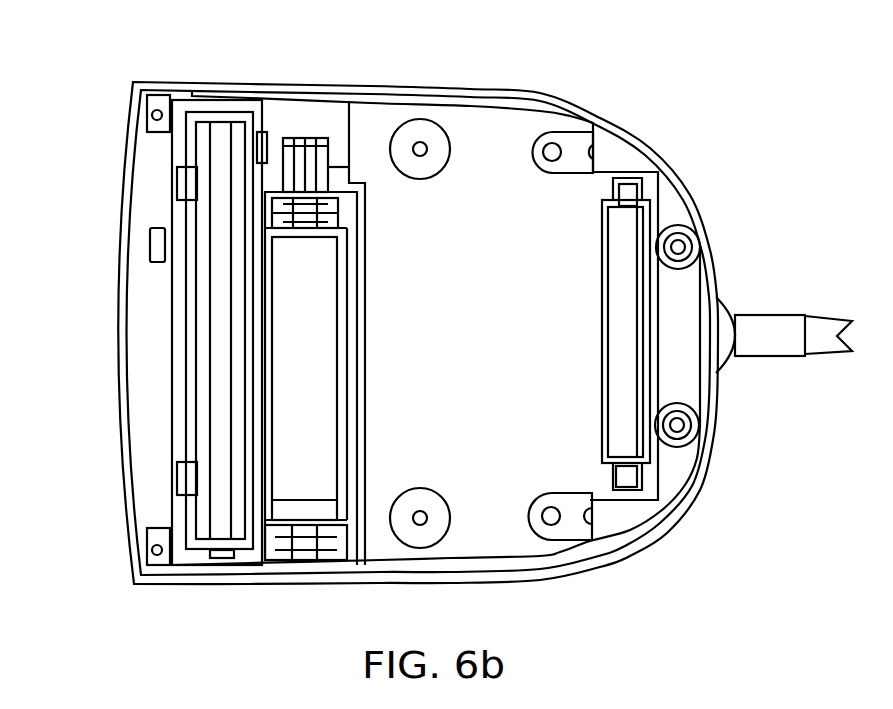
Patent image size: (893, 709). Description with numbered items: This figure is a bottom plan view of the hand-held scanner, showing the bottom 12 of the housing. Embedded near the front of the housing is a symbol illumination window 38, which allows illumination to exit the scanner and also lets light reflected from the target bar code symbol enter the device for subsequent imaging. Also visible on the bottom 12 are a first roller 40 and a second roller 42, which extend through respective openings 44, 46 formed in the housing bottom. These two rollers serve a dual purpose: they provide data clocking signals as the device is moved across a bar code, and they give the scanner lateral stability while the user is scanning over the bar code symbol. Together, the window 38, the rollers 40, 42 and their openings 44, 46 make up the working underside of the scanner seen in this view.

The bottom 12 is at (502, 132).
The symbol illumination window 38 is at (223, 507).
The first roller 40 is at (288, 318).
The second roller 42 is at (627, 227).
The opening 44 is at (350, 527).
The opening 46 is at (645, 480).